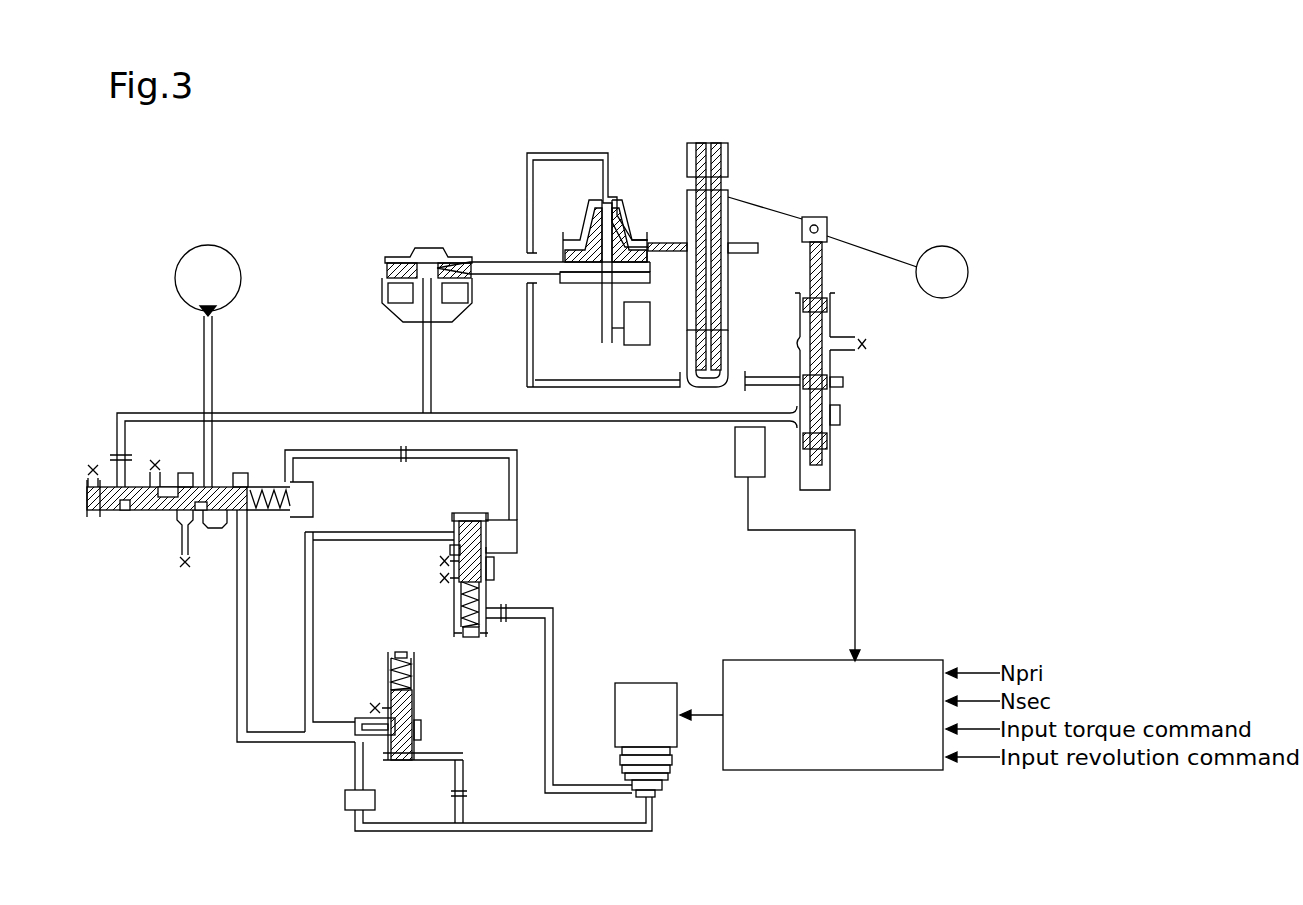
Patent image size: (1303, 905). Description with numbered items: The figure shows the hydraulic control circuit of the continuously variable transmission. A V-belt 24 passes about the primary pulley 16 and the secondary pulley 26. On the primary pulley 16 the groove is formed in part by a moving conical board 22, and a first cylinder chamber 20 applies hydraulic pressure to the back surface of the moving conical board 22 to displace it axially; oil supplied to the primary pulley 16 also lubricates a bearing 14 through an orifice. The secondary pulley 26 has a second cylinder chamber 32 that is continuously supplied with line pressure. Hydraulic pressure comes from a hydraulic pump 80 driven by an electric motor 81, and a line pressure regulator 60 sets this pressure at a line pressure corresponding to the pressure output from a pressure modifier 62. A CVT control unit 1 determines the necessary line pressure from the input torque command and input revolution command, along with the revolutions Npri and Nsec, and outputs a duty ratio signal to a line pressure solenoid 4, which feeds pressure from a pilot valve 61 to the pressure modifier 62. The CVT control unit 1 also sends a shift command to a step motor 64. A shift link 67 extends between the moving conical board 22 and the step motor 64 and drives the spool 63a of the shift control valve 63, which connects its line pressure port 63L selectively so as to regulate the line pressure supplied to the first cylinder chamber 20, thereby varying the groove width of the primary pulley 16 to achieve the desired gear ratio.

The CVT control unit 1 is at (827, 661).
The line pressure solenoid 4 is at (642, 683).
The bearing 14 is at (648, 323).
The primary pulley 16 is at (612, 180).
The first cylinder chamber 20 is at (578, 233).
The moving conical board 22 is at (562, 248).
The V-belt 24 is at (486, 262).
The secondary pulley 26 is at (413, 218).
The second cylinder chamber 32 is at (458, 300).
The line pressure regulator 60 is at (131, 512).
The pilot valve 61 is at (415, 710).
The pressure modifier 62 is at (486, 565).
The shift control valve 63 is at (833, 471).
The spool 63a is at (824, 280).
The line pressure port 63L is at (795, 436).
The step motor 64 is at (969, 272).
The shift link 67 is at (857, 240).
The hydraulic pump 80 is at (233, 246).
The electric motor 81 is at (740, 478).